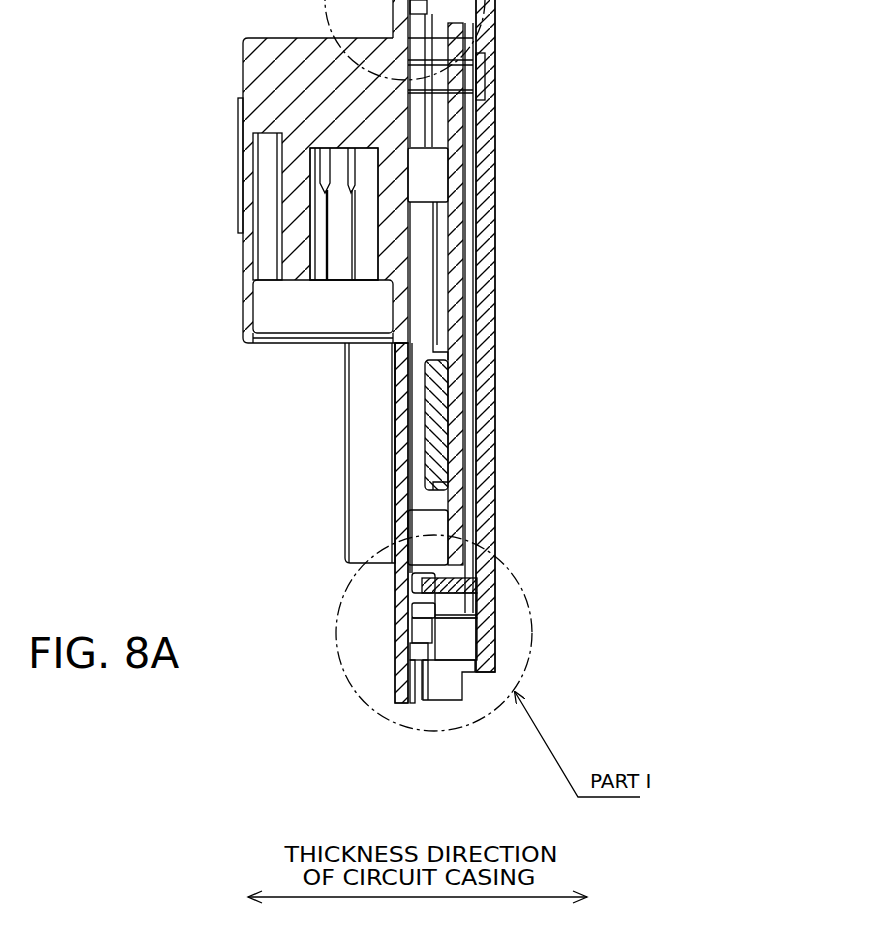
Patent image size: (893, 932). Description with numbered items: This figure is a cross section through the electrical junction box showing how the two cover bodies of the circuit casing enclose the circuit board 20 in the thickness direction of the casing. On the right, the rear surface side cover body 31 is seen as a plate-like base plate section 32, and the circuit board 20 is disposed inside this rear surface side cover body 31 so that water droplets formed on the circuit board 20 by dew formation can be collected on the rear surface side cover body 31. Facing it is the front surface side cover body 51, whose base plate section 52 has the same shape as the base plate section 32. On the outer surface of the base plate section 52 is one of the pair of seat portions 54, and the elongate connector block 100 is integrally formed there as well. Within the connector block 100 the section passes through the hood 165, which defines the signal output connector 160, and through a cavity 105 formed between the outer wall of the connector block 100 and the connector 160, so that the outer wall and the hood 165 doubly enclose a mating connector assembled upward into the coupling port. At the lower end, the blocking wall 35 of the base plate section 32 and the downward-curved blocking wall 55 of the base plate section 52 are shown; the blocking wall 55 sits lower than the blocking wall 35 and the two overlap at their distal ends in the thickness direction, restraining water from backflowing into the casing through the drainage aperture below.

The connector block 100 is at (282, 66).
The cavity 105 is at (258, 195).
The hood 165 is at (310, 228).
The connector 160 is at (252, 248).
The circuit board 20 is at (452, 236).
The base plate section 32 is at (481, 310).
The rear surface side cover body 31 is at (571, 336).
The seat portion 54 is at (358, 403).
The base plate section 52 is at (405, 428).
The front surface side cover body 51 is at (322, 523).
The blocking wall 35 is at (448, 607).
The blocking wall 55 is at (420, 606).